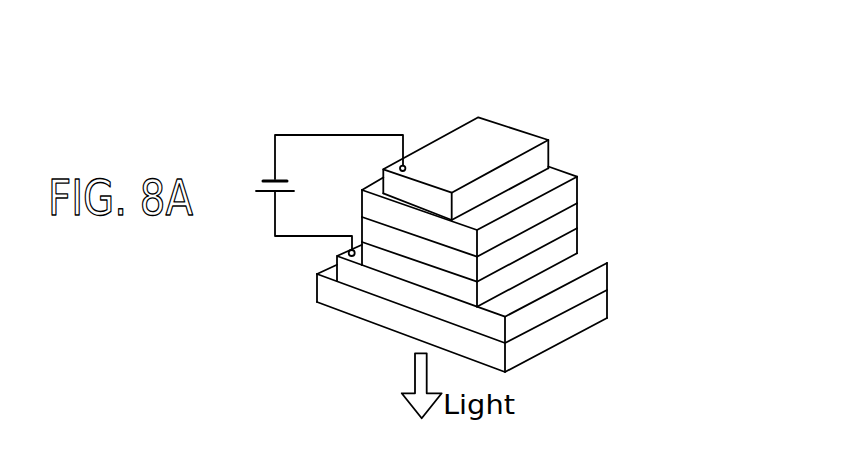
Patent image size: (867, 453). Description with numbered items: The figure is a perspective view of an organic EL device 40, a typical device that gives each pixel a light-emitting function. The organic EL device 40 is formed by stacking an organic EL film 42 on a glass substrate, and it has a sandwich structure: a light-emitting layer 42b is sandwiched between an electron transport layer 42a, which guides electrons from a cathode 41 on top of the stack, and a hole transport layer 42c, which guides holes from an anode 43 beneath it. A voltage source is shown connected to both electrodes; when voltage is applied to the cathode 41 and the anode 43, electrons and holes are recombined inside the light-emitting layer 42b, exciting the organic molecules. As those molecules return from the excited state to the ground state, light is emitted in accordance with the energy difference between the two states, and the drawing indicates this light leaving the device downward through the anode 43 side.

The organic EL device 40 is at (547, 88).
The cathode 41 is at (513, 146).
The organic EL film 42 is at (531, 234).
The electron transport layer 42a is at (565, 196).
The light-emitting layer 42b is at (565, 222).
The hole transport layer 42c is at (565, 247).
The anode 43 is at (608, 275).